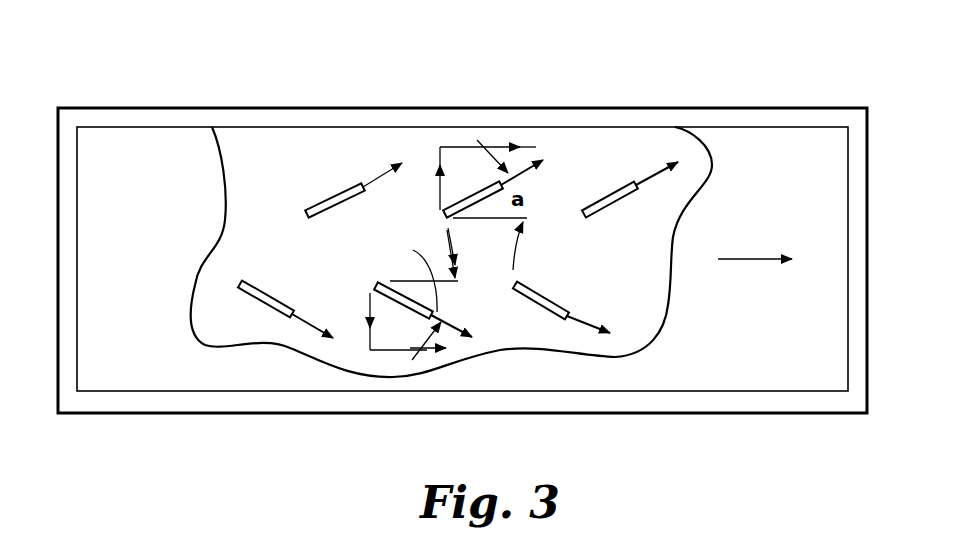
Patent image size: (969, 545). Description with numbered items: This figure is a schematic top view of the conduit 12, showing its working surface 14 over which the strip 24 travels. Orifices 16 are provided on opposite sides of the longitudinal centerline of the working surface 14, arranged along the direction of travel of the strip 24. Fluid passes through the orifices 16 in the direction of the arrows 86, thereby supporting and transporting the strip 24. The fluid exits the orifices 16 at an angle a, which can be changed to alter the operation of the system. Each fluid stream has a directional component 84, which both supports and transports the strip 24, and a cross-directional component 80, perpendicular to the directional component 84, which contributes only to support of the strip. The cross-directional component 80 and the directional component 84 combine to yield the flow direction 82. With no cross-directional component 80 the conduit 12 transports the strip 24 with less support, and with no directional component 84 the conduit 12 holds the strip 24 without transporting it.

The conduit 12 is at (740, 76).
The working surface 14 is at (297, 132).
The orifices 16 is at (320, 203).
The strip 24 is at (250, 375).
The cross-directional component 80 is at (370, 296).
The flow direction 82 is at (421, 273).
The directional component 84 is at (390, 350).
The arrows 86 is at (577, 320).